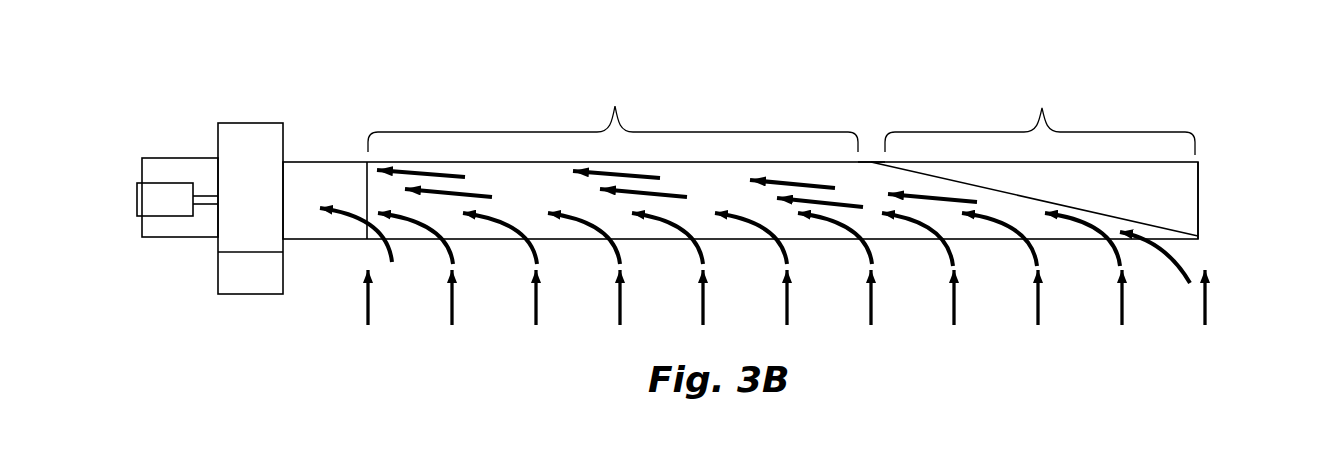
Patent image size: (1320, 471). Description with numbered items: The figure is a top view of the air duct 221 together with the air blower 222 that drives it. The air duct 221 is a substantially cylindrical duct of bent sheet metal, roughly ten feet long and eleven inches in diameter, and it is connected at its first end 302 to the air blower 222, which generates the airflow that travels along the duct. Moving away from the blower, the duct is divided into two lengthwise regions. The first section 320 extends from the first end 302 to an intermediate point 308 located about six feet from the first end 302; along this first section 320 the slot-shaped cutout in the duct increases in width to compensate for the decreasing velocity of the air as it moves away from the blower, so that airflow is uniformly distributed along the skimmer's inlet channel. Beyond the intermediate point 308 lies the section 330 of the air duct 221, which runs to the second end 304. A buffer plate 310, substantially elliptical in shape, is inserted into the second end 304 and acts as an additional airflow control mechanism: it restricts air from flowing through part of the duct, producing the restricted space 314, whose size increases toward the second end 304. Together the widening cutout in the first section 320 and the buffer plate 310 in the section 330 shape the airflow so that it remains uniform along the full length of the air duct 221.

The air duct 221 is at (348, 175).
The air blower 222 is at (200, 167).
The first end 302 is at (284, 241).
The second end 304 is at (1198, 208).
The intermediate point 308 is at (875, 141).
The buffer plate 310 is at (1082, 212).
The restricted space 314 is at (1160, 182).
The first section 320 is at (613, 117).
The section 330 is at (1040, 119).